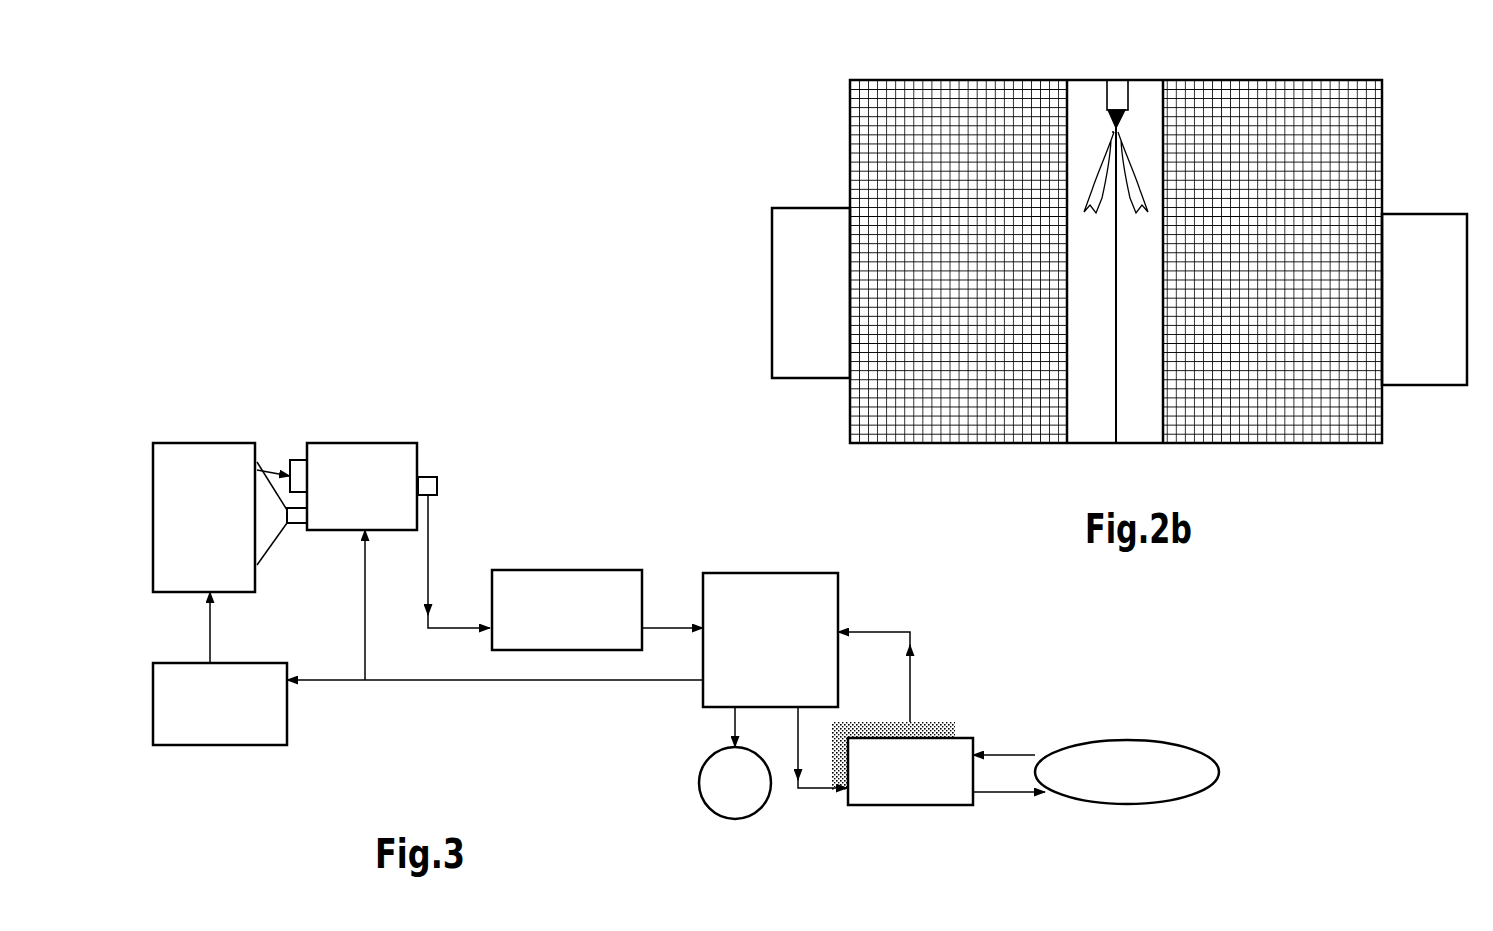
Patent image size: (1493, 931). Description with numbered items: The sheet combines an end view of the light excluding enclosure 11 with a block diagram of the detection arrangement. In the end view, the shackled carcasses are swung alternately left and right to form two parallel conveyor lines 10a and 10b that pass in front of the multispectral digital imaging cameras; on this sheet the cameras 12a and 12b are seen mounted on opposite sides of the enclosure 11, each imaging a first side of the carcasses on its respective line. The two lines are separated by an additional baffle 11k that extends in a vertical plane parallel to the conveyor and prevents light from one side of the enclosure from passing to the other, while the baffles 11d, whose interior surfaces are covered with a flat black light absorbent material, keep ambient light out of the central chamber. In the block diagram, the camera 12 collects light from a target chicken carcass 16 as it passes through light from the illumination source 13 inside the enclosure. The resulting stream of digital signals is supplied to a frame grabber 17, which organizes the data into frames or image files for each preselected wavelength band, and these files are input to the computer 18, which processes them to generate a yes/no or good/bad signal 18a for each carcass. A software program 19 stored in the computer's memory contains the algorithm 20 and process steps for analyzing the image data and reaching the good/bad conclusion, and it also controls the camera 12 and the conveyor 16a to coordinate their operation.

In FIG. 2B, the conveyor line 10a is at (1090, 218).
In FIG. 2B, the conveyor line 10b is at (1142, 218).
In FIG. 2B, the light excluding enclosure 11 is at (1278, 70).
In FIG. 2B, the baffle 11d is at (958, 80).
In FIG. 2B, the baffle 11k is at (1118, 396).
In FIG. 2B, the multispectral digital imaging camera 12a is at (1448, 214).
In FIG. 2B, the multispectral digital imaging camera 12b is at (782, 208).
In FIG. 3, the camera 12 is at (348, 443).
In FIG. 3, the illumination source 13 is at (296, 523).
In FIG. 3, the target chicken carcass 16 is at (210, 443).
In FIG. 3, the conveyor 16a is at (230, 745).
In FIG. 3, the frame grabber 17 is at (582, 570).
In FIG. 3, the computer 18 is at (766, 573).
In FIG. 3, the yes/no signal 18a is at (699, 785).
In FIG. 3, the software program 19 is at (945, 805).
In FIG. 3, the algorithm 20 is at (1110, 741).